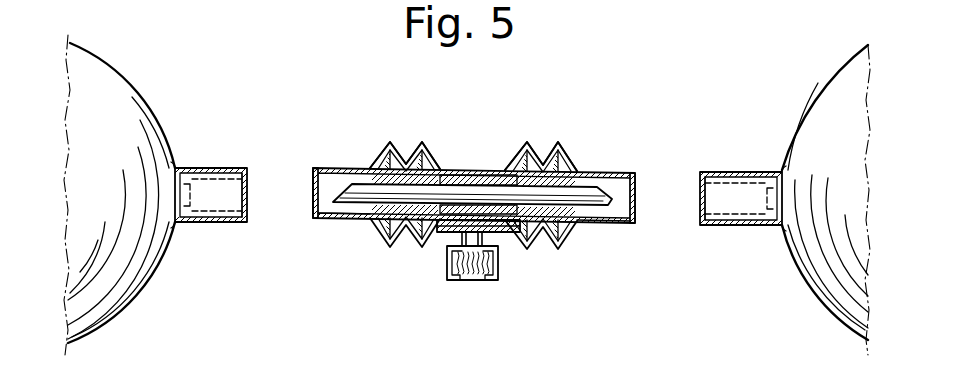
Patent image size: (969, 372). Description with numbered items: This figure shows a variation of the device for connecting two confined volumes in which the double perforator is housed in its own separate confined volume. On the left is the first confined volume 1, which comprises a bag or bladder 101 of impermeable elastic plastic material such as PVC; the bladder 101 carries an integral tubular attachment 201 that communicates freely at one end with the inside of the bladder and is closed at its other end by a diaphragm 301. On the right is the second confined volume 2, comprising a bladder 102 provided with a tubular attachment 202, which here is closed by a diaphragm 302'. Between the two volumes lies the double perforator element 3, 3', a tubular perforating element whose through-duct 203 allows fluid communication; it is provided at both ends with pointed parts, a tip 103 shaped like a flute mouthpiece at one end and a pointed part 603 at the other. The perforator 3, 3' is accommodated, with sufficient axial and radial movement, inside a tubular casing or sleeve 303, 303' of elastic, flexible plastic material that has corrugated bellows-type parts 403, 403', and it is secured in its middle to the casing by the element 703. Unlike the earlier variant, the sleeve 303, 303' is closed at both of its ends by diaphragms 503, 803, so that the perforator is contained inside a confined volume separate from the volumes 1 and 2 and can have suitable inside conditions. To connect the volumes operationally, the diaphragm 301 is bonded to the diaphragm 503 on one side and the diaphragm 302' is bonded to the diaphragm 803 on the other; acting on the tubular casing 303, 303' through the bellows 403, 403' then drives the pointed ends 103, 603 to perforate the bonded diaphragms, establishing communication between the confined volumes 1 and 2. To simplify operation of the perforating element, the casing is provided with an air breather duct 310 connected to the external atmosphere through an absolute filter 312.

The first confined volume 1 is at (156, 107).
The second confined volume 2 is at (816, 84).
The bladder 101 is at (130, 78).
The bladder 102 is at (833, 310).
The tubular attachment 201 is at (207, 168).
The tubular attachment 202 is at (735, 226).
The diaphragm 301 is at (248, 222).
The diaphragm 302' is at (710, 171).
The perforating element 3 is at (474, 208).
The perforating element 3' is at (542, 213).
The tip 103 is at (336, 219).
The tubular casing 303 is at (326, 255).
The tubular casing 303' is at (611, 244).
The bellows-type part 403 is at (405, 134).
The bellows-type part 403' is at (544, 135).
The perforable diaphragm 503 is at (307, 181).
The pointed part 603 is at (637, 200).
The securing element 703 is at (473, 168).
The diaphragm 803 is at (636, 176).
The tubular through-duct 203 is at (443, 233).
The air breather duct 310 is at (505, 233).
The absolute filter 312 is at (465, 281).